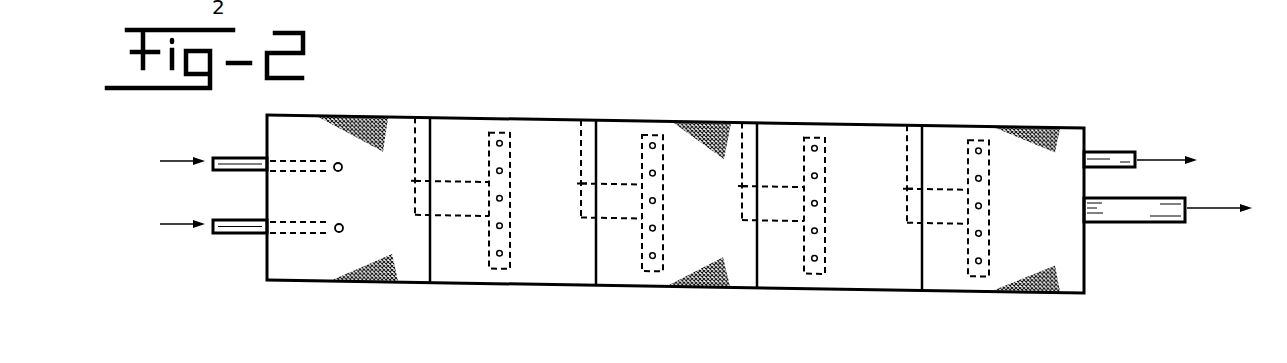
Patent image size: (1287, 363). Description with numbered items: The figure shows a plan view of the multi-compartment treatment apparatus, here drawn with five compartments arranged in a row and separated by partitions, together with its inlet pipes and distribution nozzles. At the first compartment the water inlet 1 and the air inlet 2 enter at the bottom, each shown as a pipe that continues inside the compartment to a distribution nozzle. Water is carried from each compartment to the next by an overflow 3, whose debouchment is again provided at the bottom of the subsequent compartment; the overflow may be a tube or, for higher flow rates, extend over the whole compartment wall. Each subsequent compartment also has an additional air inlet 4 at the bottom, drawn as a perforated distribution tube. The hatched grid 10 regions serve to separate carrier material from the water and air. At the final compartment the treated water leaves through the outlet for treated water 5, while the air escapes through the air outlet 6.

The water inlet 1 is at (241, 160).
The air inlet 2 is at (248, 230).
The overflow 3 is at (689, 170).
The additional air inlet 4 is at (739, 205).
The outlet for treated water 5 is at (1130, 207).
The air outlet 6 is at (1110, 152).
The grid 10 is at (689, 204).